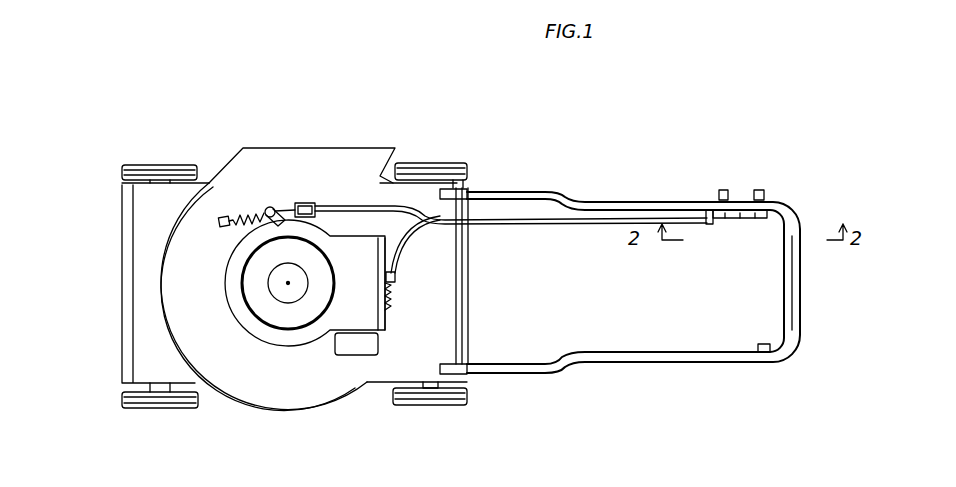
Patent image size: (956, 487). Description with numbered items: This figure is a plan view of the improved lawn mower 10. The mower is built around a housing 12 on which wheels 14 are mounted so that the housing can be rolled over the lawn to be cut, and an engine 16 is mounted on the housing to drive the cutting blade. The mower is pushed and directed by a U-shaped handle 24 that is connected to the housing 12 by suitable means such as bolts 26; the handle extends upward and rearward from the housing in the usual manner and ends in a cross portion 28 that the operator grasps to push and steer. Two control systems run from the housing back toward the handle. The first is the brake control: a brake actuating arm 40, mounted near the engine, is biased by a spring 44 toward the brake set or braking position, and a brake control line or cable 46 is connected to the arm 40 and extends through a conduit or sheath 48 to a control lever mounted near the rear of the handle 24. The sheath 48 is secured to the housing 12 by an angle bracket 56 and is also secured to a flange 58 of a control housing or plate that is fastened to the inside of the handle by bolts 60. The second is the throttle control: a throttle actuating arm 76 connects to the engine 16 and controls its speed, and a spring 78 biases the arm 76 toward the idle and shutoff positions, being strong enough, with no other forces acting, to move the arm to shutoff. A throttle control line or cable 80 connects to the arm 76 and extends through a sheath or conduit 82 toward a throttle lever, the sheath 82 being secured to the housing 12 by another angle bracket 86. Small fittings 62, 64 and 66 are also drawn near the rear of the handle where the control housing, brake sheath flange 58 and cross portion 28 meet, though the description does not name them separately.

The lawn mower 10 is at (80, 86).
The housing 12 is at (130, 307).
The wheels 14 is at (122, 168).
The engine 16 is at (228, 262).
The U-shaped handle 24 is at (567, 368).
The bolts 26 is at (467, 165).
The cross portion 28 is at (801, 327).
The brake actuating arm 40 is at (272, 206).
The spring 44 is at (240, 212).
The brake control line or cable 46 is at (287, 205).
The conduit or sheath 48 is at (347, 207).
The angle bracket 56 is at (303, 200).
The flange 58 is at (713, 226).
The bolts 60 is at (759, 190).
The clip 62 is at (763, 218).
The bolt 64 is at (763, 344).
The grip tube 66 is at (783, 277).
The throttle actuating arm 76 is at (393, 295).
The spring 78 is at (393, 314).
The throttle control line or cable 80 is at (396, 286).
The sheath or conduit 82 is at (477, 218).
The angle bracket 86 is at (396, 270).